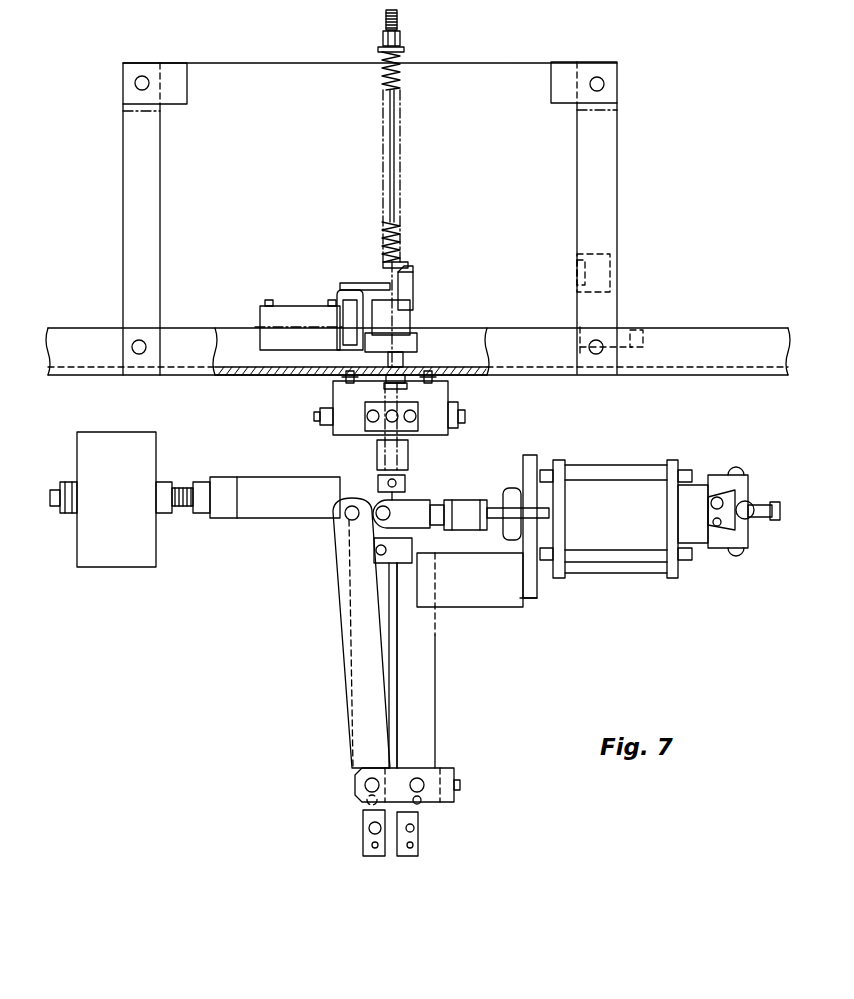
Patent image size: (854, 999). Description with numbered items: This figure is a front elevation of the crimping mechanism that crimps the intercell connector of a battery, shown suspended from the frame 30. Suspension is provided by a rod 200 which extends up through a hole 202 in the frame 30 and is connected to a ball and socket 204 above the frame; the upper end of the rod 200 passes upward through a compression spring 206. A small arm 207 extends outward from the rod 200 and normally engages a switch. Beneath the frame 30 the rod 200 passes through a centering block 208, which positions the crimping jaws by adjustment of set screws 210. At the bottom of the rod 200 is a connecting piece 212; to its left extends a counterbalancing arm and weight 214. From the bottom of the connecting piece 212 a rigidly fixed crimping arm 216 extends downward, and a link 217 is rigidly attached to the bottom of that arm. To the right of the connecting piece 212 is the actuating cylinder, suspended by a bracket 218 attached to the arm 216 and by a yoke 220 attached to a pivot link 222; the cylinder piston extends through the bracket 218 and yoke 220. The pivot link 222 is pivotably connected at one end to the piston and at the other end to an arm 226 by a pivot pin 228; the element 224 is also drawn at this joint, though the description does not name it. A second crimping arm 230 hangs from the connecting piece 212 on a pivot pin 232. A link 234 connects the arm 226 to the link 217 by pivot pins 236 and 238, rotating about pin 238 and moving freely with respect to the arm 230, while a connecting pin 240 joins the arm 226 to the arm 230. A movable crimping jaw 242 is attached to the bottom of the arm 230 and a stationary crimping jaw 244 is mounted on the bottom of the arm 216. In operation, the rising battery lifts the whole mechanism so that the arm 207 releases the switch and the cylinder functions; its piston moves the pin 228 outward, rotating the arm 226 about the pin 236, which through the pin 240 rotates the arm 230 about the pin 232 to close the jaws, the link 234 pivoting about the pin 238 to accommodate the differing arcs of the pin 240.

The frame 30 is at (723, 338).
The rod 200 is at (392, 198).
The hole 202 is at (410, 370).
The ball and socket 204 is at (405, 368).
The compression spring 206 is at (398, 86).
The small arm 207 is at (358, 295).
The centering block 208 is at (440, 420).
The set screws 210 is at (346, 378).
The connecting piece 212 is at (402, 494).
The counterbalancing arm and weight 214 is at (262, 508).
The crimping arm 216 is at (426, 708).
The link 217 is at (455, 790).
The bracket 218 is at (503, 598).
The yoke 220 is at (425, 510).
The pivot link 222 is at (378, 500).
The pivot pin 224 is at (395, 500).
The arm 226 is at (352, 600).
The pivot pin 228 is at (350, 518).
The second crimping arm 230 is at (387, 665).
The pivot pin 232 is at (376, 556).
The link 234 is at (413, 795).
The pivot pin 236 is at (365, 786).
The pivot pin 238 is at (420, 790).
The connecting pin 240 is at (370, 805).
The movable crimping jaw 242 is at (377, 848).
The stationary crimping jaw 244 is at (410, 858).